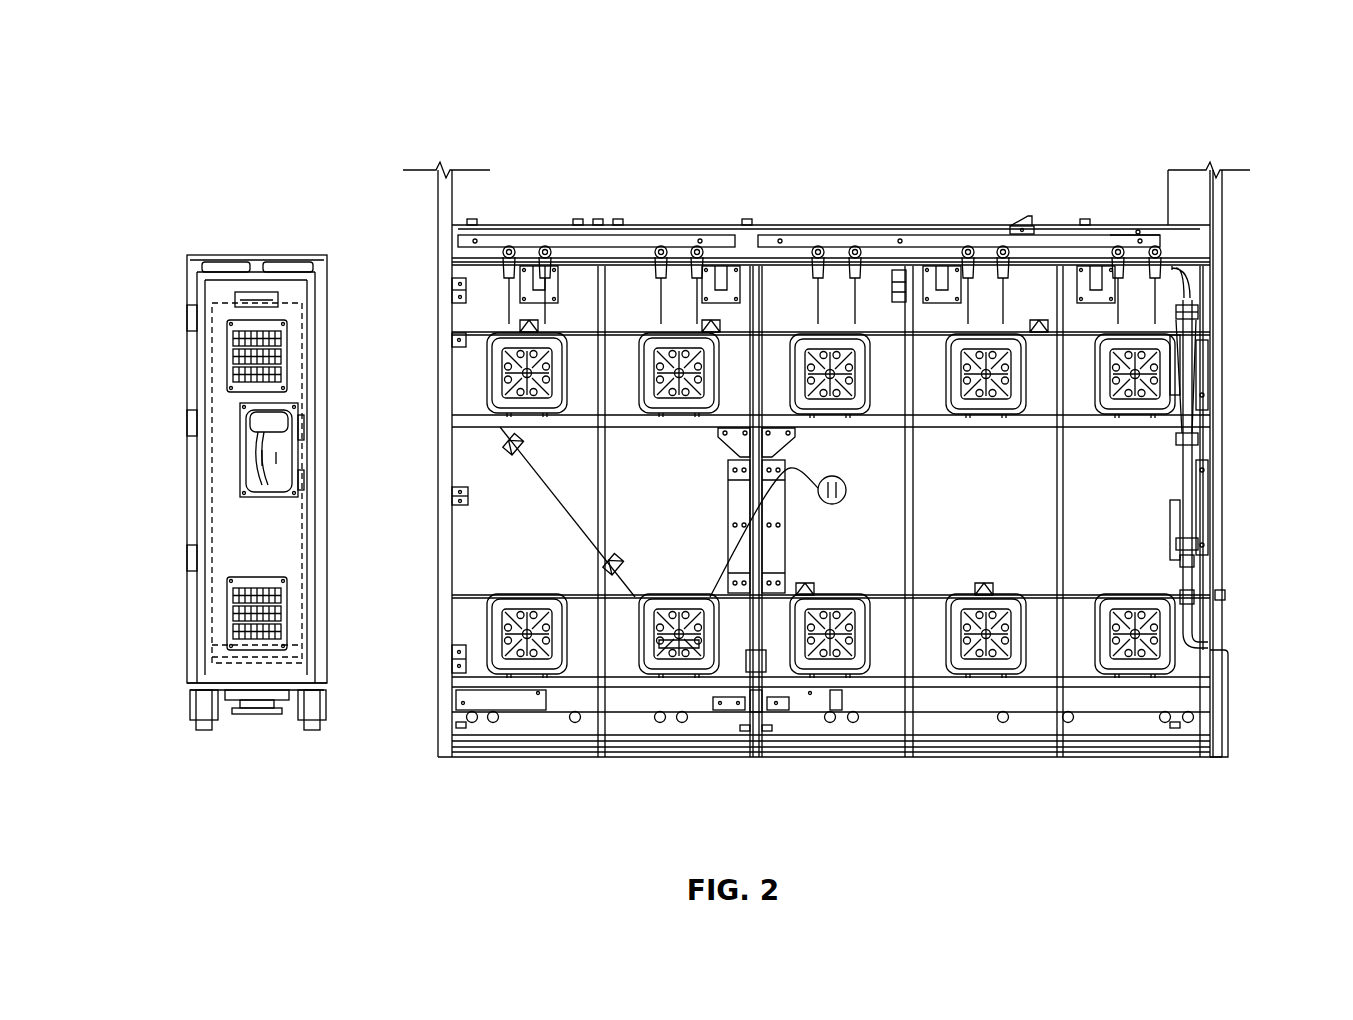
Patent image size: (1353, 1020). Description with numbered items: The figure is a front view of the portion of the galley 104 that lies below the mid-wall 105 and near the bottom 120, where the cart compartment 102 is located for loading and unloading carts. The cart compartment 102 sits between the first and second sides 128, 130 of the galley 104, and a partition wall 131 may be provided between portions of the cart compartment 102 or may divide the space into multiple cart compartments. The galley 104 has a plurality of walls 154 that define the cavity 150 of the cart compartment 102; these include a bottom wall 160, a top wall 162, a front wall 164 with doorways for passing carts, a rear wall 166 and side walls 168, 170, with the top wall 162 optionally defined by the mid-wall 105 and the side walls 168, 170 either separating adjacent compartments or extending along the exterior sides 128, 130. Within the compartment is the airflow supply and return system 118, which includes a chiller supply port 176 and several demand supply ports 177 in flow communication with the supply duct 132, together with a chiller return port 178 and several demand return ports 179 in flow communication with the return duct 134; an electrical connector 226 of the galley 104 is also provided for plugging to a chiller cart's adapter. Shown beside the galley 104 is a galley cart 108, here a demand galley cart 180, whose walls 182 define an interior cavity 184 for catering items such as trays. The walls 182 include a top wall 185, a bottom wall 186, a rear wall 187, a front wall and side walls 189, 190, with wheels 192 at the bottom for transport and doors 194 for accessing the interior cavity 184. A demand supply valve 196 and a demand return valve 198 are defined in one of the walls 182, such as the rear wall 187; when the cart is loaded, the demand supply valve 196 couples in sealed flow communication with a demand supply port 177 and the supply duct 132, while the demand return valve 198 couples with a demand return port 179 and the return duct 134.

The cart compartment 102 is at (1152, 498).
The galley 104 is at (1203, 95).
The mid-wall 105 is at (1128, 225).
The galley cart 108 is at (222, 240).
The airflow supply and return system 118 is at (1075, 432).
The bottom 120 is at (1112, 757).
The first side 128 is at (485, 553).
The second side 130 is at (1222, 603).
The partition wall 131 is at (755, 685).
The supply duct 132 is at (1048, 420).
The return duct 134 is at (990, 655).
The cavity 150 is at (478, 450).
The walls 154 is at (452, 343).
The bottom wall 160 is at (815, 757).
The top wall 162 is at (752, 216).
The front wall 164 is at (1068, 245).
The rear wall 166 is at (1027, 305).
The side wall 168 is at (455, 400).
The side wall 170 is at (1213, 397).
The chiller supply port 176 is at (838, 345).
The demand supply ports 177 is at (668, 348).
The chiller return port 178 is at (975, 648).
The demand return ports 179 is at (680, 597).
The demand galley cart 180 is at (218, 508).
The walls 182 is at (258, 270).
The interior cavity 184 is at (228, 463).
The top wall 185 is at (300, 265).
The bottom wall 186 is at (255, 700).
The rear wall 187 is at (218, 555).
The side wall 189 is at (327, 612).
The side wall 190 is at (190, 618).
The wheels 192 is at (200, 720).
The doors 194 is at (290, 500).
The demand supply valve 196 is at (282, 350).
The demand return valve 198 is at (283, 640).
The electrical connector 226 is at (697, 645).